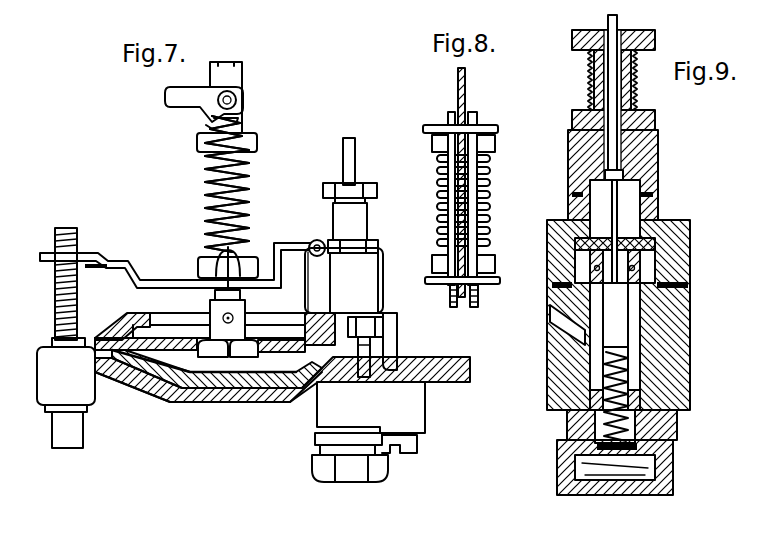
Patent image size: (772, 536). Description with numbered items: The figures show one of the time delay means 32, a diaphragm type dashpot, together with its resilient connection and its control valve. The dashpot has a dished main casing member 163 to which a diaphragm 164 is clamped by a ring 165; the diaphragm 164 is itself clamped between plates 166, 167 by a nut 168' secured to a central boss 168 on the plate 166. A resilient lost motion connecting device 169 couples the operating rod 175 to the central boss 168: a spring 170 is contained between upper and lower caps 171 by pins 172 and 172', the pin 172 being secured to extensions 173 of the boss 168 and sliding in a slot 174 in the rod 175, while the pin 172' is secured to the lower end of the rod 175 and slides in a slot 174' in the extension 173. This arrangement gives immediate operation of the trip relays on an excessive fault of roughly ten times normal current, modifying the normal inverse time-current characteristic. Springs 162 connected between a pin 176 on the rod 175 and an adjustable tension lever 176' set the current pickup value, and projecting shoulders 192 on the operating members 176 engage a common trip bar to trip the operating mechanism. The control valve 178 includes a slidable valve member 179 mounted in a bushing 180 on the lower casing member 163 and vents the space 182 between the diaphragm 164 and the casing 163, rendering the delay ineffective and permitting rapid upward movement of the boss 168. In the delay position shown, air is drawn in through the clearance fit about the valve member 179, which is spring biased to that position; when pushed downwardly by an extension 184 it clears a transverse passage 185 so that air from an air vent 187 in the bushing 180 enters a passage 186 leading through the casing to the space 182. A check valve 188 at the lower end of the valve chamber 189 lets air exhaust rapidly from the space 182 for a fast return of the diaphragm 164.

In FIG. 7, the time delay means 32 is at (143, 179).
In FIG. 7, the springs 162 is at (239, 120).
In FIG. 7, the dished main casing member 163 is at (165, 405).
In FIG. 7, the diaphragm 164 is at (296, 392).
In FIG. 7, the ring 165 is at (121, 320).
In FIG. 7, the plate 166 is at (203, 384).
In FIG. 7, the plate 167 is at (181, 340).
In FIG. 7, the central boss 168 is at (243, 323).
In FIG. 7, the nut 168' is at (290, 329).
In FIG. 7, the resilient lost motion connecting device 169 is at (183, 207).
In FIG. 8, the resilient lost motion connecting device 169 is at (533, 204).
In FIG. 7, the spring 170 is at (249, 178).
In FIG. 8, the spring 170 is at (490, 172).
In FIG. 7, the upper and lower caps 171 is at (257, 142).
In FIG. 8, the upper and lower caps 171 is at (495, 144).
In FIG. 7, the pin 172 is at (204, 210).
In FIG. 8, the pin 172 is at (475, 120).
In FIG. 8, the pin 172' is at (475, 291).
In FIG. 8, the extensions 173 is at (461, 307).
In FIG. 8, the slot 174 is at (420, 145).
In FIG. 8, the slot 174' is at (421, 263).
In FIG. 7, the operating rod 175 is at (243, 70).
In FIG. 8, the operating rod 175 is at (465, 76).
In FIG. 7, the pin 176 is at (249, 98).
In FIG. 7, the adjustable tension lever 176' is at (176, 267).
In FIG. 7, the control valve 178 is at (321, 221).
In FIG. 9, the control valve 178 is at (702, 166).
In FIG. 9, the slidable valve member 179 is at (641, 309).
In FIG. 7, the bushing 180 is at (386, 298).
In FIG. 9, the bushing 180 is at (572, 165).
In FIG. 7, the space 182 is at (238, 390).
In FIG. 7, the extension 184 is at (335, 151).
In FIG. 9, the extension 184 is at (618, 20).
In FIG. 9, the transverse passage 185 is at (648, 347).
In FIG. 9, the passage 186 is at (557, 322).
In FIG. 9, the air vent 187 is at (656, 197).
In FIG. 9, the check valve 188 is at (655, 452).
In FIG. 9, the valve chamber 189 is at (650, 380).
In FIG. 7, the projecting shoulders 192 is at (168, 97).